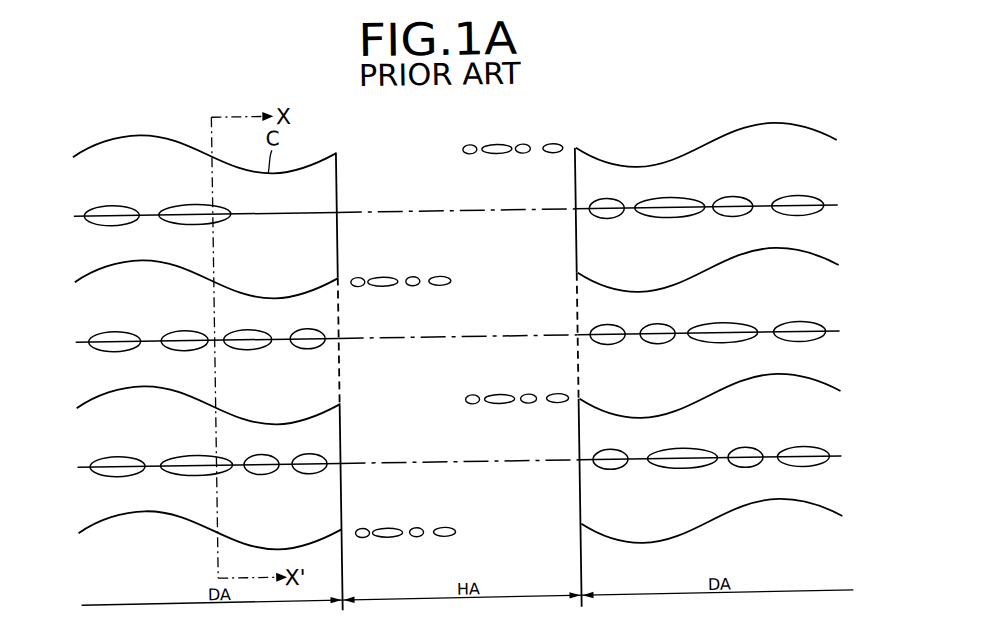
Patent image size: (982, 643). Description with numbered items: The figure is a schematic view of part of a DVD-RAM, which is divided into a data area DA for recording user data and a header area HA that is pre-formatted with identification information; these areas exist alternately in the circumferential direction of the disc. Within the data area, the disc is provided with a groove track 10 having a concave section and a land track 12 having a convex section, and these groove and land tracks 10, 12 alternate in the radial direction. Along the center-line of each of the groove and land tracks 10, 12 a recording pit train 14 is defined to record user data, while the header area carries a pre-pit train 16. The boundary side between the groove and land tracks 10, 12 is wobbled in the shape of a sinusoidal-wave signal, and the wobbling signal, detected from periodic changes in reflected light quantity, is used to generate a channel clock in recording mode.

The groove track 10 is at (462, 336).
The land track 12 is at (463, 336).
The recording pit train 14 is at (263, 346).
The pre-pit train 16 is at (499, 147).